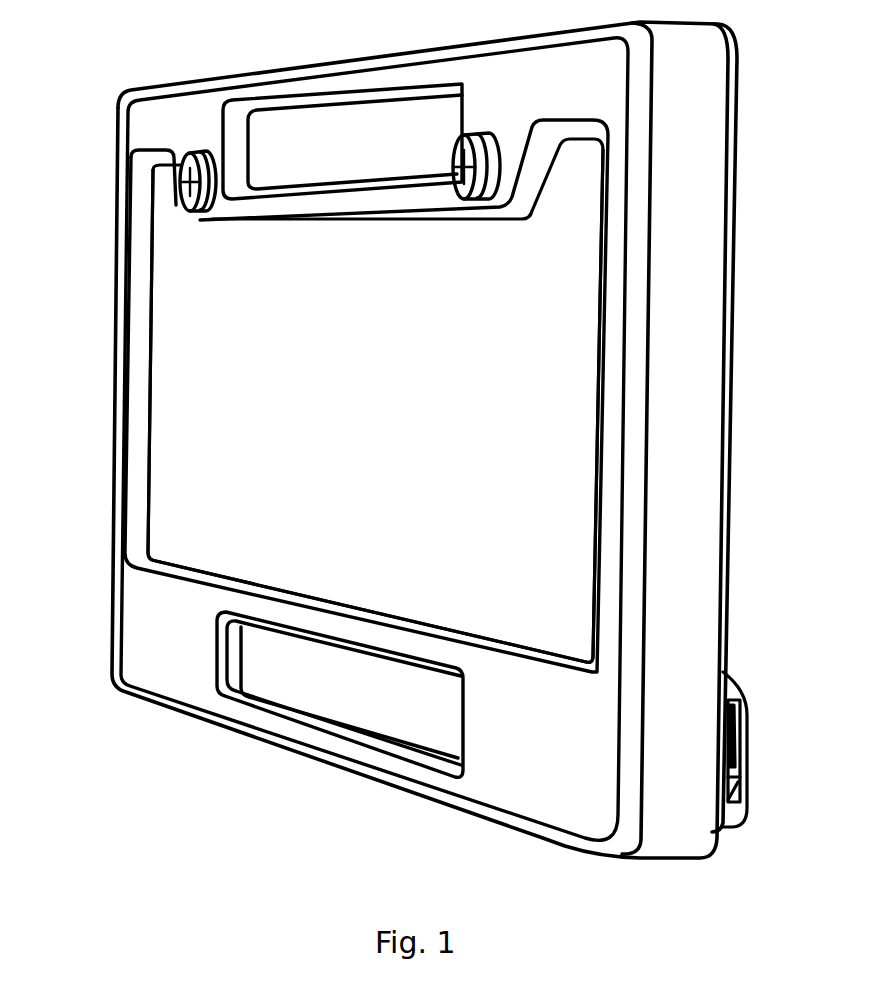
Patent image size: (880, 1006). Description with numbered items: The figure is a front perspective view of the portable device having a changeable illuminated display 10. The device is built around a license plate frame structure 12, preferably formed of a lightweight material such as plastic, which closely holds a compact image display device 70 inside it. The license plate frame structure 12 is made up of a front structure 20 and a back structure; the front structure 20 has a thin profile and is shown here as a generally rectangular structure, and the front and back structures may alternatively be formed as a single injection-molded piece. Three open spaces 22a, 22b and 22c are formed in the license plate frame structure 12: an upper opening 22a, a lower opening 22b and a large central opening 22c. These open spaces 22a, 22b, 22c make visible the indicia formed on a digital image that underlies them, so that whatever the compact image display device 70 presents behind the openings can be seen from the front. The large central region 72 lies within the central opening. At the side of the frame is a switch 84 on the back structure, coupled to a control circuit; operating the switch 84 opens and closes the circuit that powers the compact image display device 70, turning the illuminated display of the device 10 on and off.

The portable device having a changeable illuminated display 10 is at (561, 848).
The license plate frame structure 12 is at (138, 600).
The front structure 20 is at (183, 633).
The open space 22a is at (327, 148).
The open space 22b is at (303, 696).
The open space 22c is at (327, 345).
The compact image display device 70 is at (155, 488).
The recess floor 72 is at (500, 550).
The switch 84 is at (740, 762).